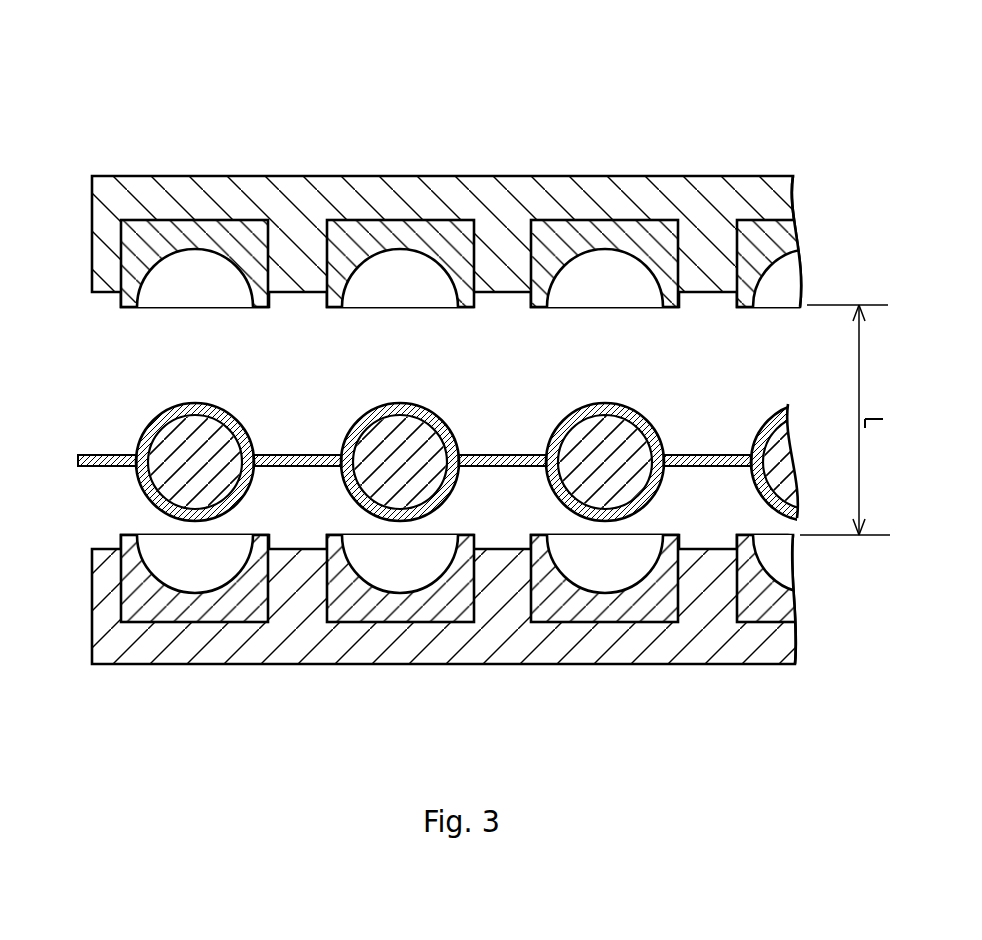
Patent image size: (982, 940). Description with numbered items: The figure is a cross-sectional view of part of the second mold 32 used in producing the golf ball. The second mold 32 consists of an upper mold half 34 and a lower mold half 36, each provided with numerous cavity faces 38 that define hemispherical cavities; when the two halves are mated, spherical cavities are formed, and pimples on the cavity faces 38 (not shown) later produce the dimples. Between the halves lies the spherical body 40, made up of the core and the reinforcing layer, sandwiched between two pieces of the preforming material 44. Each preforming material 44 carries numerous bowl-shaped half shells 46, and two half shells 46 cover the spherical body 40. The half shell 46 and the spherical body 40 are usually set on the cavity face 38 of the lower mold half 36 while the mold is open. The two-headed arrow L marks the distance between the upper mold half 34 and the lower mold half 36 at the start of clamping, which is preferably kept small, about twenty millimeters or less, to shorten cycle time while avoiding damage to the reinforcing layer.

The second mold 32 is at (782, 47).
The upper mold half 34 is at (447, 190).
The lower mold half 36 is at (445, 655).
The cavity face 38 is at (567, 260).
The spherical body 40 is at (411, 430).
The preforming material 44 is at (709, 455).
The half shell 46 is at (186, 404).